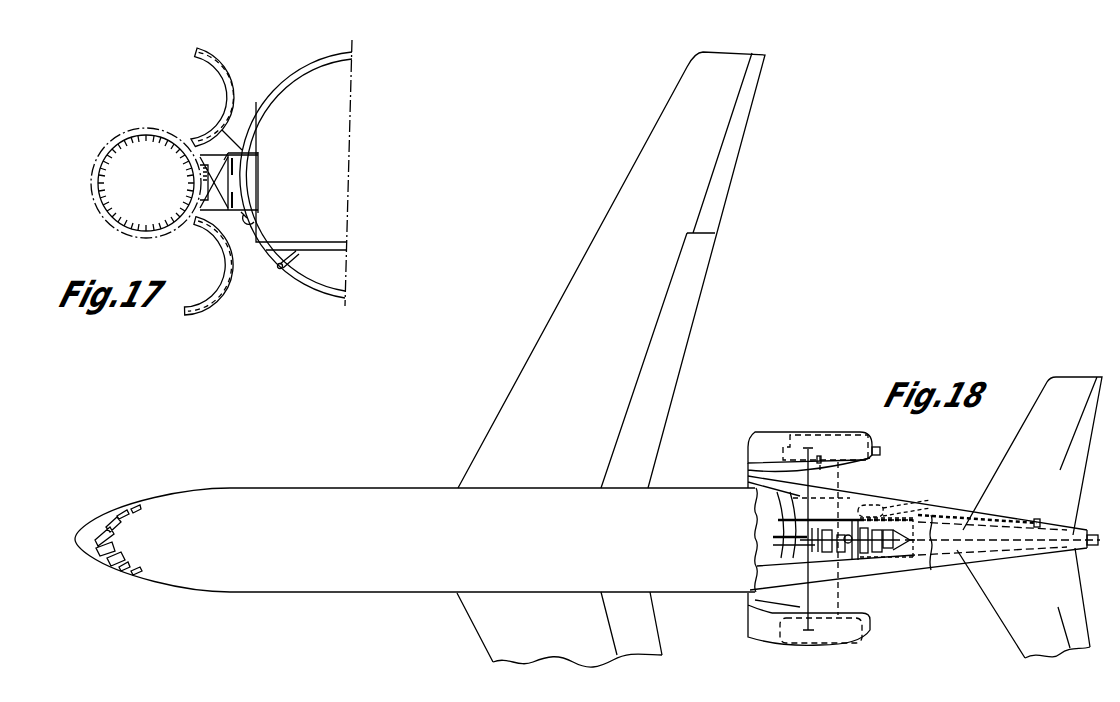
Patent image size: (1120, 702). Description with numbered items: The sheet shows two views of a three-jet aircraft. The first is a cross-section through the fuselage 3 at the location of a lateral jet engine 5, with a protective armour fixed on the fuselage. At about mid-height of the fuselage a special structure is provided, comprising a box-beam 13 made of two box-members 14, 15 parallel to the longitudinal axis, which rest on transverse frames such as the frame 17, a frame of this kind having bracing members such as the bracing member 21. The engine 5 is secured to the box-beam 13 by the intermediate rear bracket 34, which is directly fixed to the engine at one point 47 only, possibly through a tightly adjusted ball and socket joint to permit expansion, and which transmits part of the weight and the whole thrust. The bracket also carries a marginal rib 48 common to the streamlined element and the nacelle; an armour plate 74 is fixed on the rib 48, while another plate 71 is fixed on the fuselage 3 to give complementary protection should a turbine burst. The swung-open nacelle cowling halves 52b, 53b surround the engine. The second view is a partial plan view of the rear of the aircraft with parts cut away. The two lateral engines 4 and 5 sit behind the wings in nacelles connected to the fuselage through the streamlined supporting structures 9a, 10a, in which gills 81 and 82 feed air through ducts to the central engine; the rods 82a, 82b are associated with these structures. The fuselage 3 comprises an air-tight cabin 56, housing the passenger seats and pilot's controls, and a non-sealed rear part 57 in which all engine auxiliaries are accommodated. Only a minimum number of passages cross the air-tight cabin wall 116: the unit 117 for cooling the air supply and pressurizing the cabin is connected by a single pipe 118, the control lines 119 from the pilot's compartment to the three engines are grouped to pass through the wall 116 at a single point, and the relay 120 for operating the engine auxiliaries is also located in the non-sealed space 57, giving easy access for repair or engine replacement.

In FIG. 17, the fuselage 3 is at (286, 73).
In FIG. 18, the fuselage 3 is at (416, 540).
In FIG. 17, the transverse frame 17 is at (290, 71).
In FIG. 17, the lateral jet engine 5 is at (138, 134).
In FIG. 18, the lateral jet engine 5 is at (873, 628).
In FIG. 17, the upper nacelle door 52b is at (237, 59).
In FIG. 17, the lower nacelle door 53b is at (228, 266).
In FIG. 17, the marginal rib 48 is at (203, 167).
In FIG. 17, the fixing point 47 is at (202, 187).
In FIG. 17, the rear bracket 34 is at (242, 173).
In FIG. 17, the armour plate 74 is at (242, 195).
In FIG. 17, the box-beam 13 is at (258, 181).
In FIG. 17, the box-member 14 is at (254, 222).
In FIG. 17, the box-member 15 is at (242, 156).
In FIG. 17, the armour plate 71 is at (234, 140).
In FIG. 18, the bracing member 21 is at (730, 58).
In FIG. 18, the control lines 119 is at (990, 508).
In FIG. 18, the streamlined supporting structure 10a is at (865, 610).
In FIG. 18, the non-sealed rear part 57 is at (938, 570).
In FIG. 18, the lateral jet engine 4 is at (876, 449).
In FIG. 18, the gill 81 is at (755, 474).
In FIG. 18, the gill 82 is at (752, 607).
In FIG. 18, the door actuating rod 82a is at (773, 598).
In FIG. 18, the door actuating rod 82b is at (958, 493).
In FIG. 18, the air-tight cabin 56 is at (775, 507).
In FIG. 18, the pipe 118 is at (778, 522).
In FIG. 18, the relay 120 is at (791, 552).
In FIG. 18, the cooling and pressurizing unit 117 is at (869, 547).
In FIG. 18, the air-tight cabin wall 116 is at (745, 548).
In FIG. 18, the streamlined supporting structure 9a is at (875, 483).